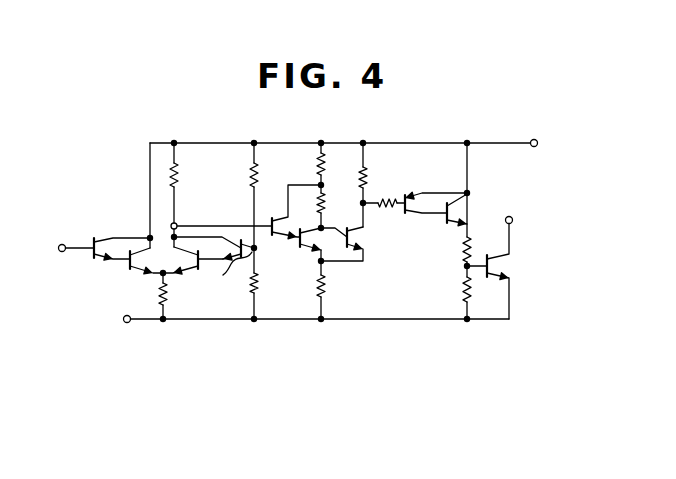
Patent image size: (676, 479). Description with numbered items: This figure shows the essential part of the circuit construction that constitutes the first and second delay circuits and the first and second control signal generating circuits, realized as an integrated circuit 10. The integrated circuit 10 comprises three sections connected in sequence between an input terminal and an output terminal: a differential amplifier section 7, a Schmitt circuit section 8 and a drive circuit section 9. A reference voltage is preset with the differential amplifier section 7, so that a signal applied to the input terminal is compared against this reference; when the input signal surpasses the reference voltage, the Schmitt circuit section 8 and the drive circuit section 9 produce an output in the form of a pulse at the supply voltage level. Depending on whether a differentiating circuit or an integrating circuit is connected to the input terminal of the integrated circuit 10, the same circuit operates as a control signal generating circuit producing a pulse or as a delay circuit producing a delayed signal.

The integrated circuit 10 is at (186, 139).
The differential amplifier section 7 is at (217, 319).
The Schmitt circuit section 8 is at (375, 319).
The drive circuit section 9 is at (437, 305).